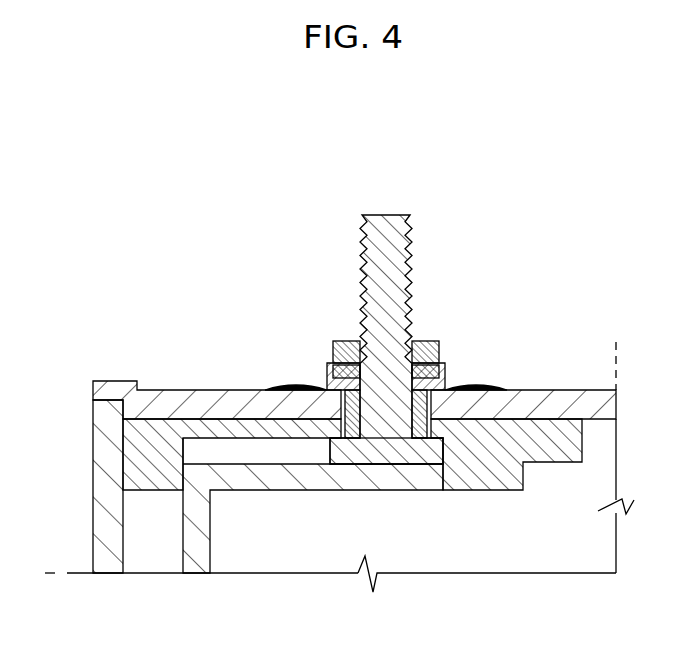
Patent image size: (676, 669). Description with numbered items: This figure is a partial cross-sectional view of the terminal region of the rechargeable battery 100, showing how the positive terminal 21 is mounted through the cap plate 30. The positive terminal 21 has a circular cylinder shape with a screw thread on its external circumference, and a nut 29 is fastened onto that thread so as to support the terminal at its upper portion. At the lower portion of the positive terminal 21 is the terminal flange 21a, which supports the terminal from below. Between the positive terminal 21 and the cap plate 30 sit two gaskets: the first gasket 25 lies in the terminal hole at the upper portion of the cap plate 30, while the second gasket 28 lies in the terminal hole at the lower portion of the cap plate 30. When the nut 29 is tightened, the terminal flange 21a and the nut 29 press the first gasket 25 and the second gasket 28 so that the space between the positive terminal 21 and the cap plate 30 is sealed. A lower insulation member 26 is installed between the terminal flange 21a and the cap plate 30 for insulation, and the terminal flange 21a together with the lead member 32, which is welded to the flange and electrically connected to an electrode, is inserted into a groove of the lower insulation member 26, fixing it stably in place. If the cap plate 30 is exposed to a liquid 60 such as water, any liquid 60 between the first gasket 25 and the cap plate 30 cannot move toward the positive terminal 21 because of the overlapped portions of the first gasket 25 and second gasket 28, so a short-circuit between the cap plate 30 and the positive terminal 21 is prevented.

The rechargeable battery 100 is at (255, 211).
The positive terminal 21 is at (410, 247).
The terminal flange 21a is at (343, 450).
The first gasket 25 is at (448, 387).
The lower insulation member 26 is at (140, 460).
The second gasket 28 is at (340, 402).
The nut 29 is at (427, 345).
The cap plate 30 is at (570, 404).
The lead member 32 is at (258, 478).
The liquid 60 is at (277, 388).